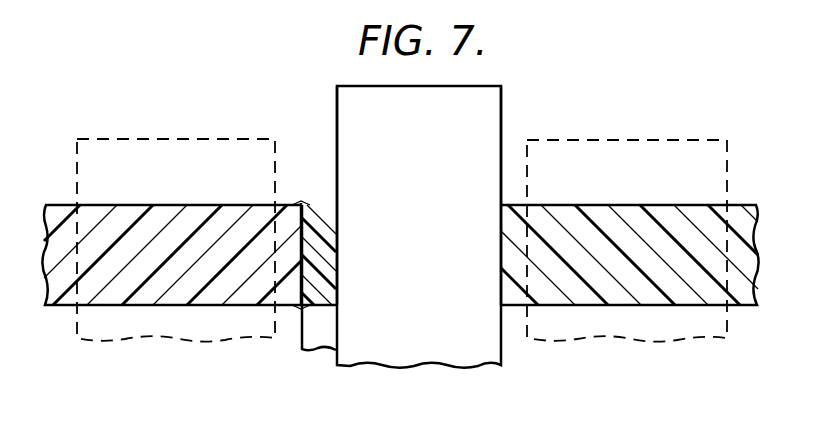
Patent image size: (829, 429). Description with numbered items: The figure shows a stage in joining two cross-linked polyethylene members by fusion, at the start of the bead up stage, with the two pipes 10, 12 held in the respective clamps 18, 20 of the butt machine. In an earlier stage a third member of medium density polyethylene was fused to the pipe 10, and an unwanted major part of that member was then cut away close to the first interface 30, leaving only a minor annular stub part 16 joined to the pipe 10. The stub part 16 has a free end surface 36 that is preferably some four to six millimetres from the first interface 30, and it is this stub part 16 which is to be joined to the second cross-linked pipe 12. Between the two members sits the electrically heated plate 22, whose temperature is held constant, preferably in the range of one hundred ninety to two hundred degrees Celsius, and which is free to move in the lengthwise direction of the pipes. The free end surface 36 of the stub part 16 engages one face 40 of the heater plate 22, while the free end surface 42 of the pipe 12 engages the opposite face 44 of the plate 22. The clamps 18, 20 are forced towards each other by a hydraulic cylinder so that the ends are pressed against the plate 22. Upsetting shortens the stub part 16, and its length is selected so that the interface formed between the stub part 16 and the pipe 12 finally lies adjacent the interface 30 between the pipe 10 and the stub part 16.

The pipe 10 is at (127, 213).
The pipe 12 is at (600, 207).
The stub part 16 is at (320, 208).
The clamp 18 is at (182, 137).
The clamp 20 is at (597, 137).
The electrically heated plate 22 is at (437, 130).
The first interface 30 is at (300, 248).
The free end surface 36 is at (339, 228).
The face of the heater plate 40 is at (336, 105).
The free end surface 42 is at (499, 254).
The opposite face of the plate 44 is at (503, 103).